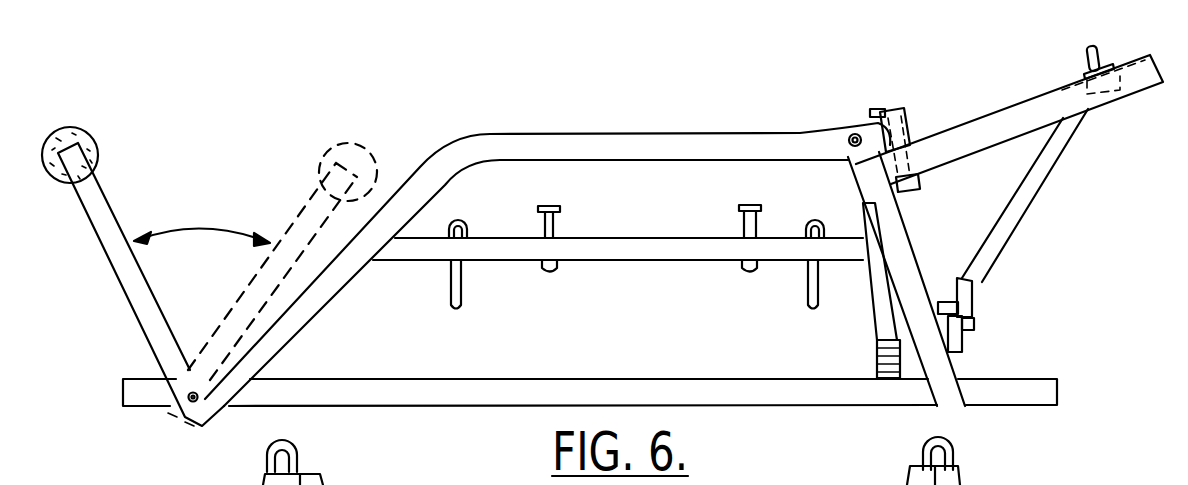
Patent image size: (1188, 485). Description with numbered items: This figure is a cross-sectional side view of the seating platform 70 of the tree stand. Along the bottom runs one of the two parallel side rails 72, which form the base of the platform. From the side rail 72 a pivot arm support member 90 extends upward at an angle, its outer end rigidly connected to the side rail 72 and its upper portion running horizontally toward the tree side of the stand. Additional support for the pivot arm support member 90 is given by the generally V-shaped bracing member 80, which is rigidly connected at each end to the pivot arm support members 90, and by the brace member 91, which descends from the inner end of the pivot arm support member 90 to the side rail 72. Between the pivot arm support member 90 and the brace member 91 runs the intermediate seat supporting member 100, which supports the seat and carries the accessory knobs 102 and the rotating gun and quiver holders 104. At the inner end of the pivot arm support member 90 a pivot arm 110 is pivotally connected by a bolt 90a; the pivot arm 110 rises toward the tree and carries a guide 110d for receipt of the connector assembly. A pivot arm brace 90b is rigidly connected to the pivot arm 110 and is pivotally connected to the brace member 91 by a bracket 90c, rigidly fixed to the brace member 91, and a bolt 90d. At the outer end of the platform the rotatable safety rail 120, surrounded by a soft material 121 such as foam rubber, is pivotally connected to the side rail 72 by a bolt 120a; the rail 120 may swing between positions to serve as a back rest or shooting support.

The seating platform 70 is at (654, 112).
The side rail 72 is at (497, 380).
The V-shaped bracing member 80 is at (868, 325).
The pivot arm support member 90 is at (516, 134).
The bolt 90a is at (877, 110).
The pivot arm brace 90b is at (1024, 204).
The bracket 90c is at (960, 346).
The bolt 90d is at (947, 302).
The brace member 91 is at (897, 228).
The intermediate seat supporting member 100 is at (627, 263).
The accessory knob 102 is at (740, 218).
The rotating gun and quiver holder 104 is at (449, 283).
The pivot arm 110 is at (982, 104).
The guide 110d is at (1099, 50).
The rotatable safety rail 120 is at (95, 118).
The bolt 120a is at (190, 428).
The soft material 121 is at (99, 146).